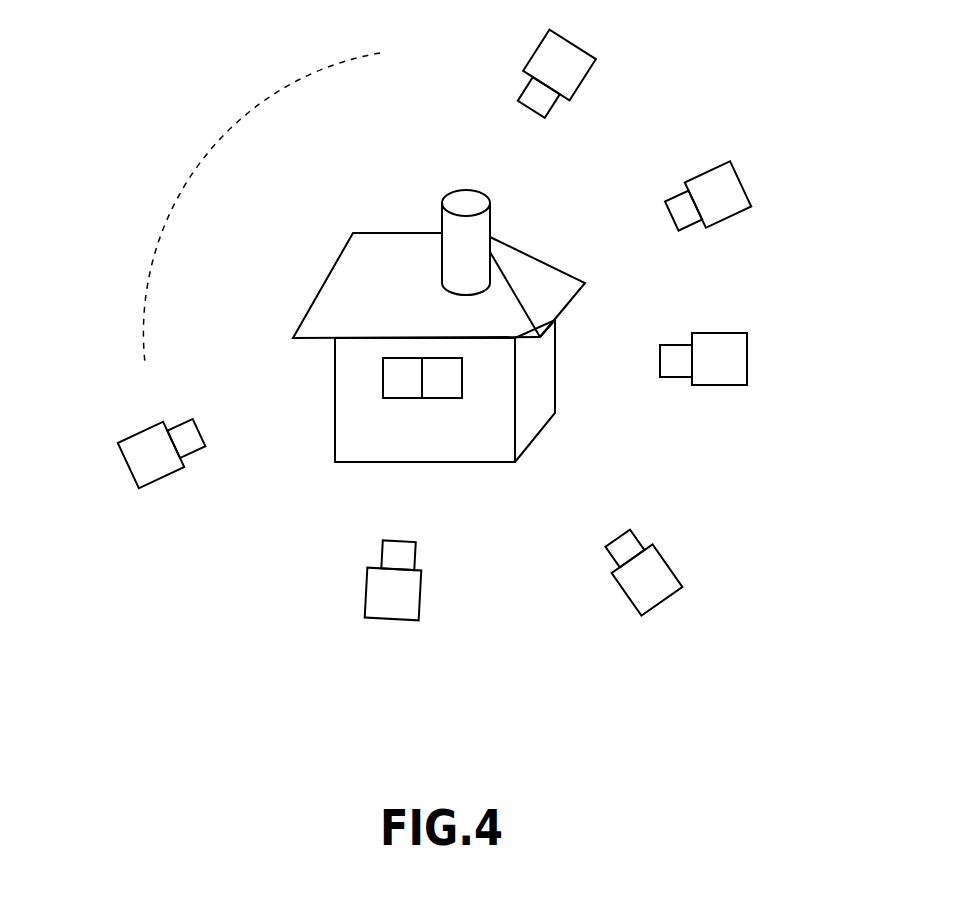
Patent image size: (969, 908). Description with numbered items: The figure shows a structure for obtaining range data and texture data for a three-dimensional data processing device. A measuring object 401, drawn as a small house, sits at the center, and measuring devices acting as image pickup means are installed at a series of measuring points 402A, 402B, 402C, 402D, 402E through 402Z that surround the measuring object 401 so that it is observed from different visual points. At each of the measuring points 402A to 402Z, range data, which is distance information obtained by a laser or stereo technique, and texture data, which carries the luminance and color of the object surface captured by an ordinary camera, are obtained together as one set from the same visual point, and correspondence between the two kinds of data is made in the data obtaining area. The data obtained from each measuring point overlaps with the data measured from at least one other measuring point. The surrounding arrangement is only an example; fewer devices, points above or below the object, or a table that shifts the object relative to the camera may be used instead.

The measuring object 401 is at (402, 232).
The measuring point 402A is at (423, 597).
The measuring point 402B is at (673, 567).
The measuring point 402C is at (747, 358).
The measuring point 402D is at (743, 183).
The measuring point 402E is at (577, 43).
The measuring point 402Z is at (120, 462).